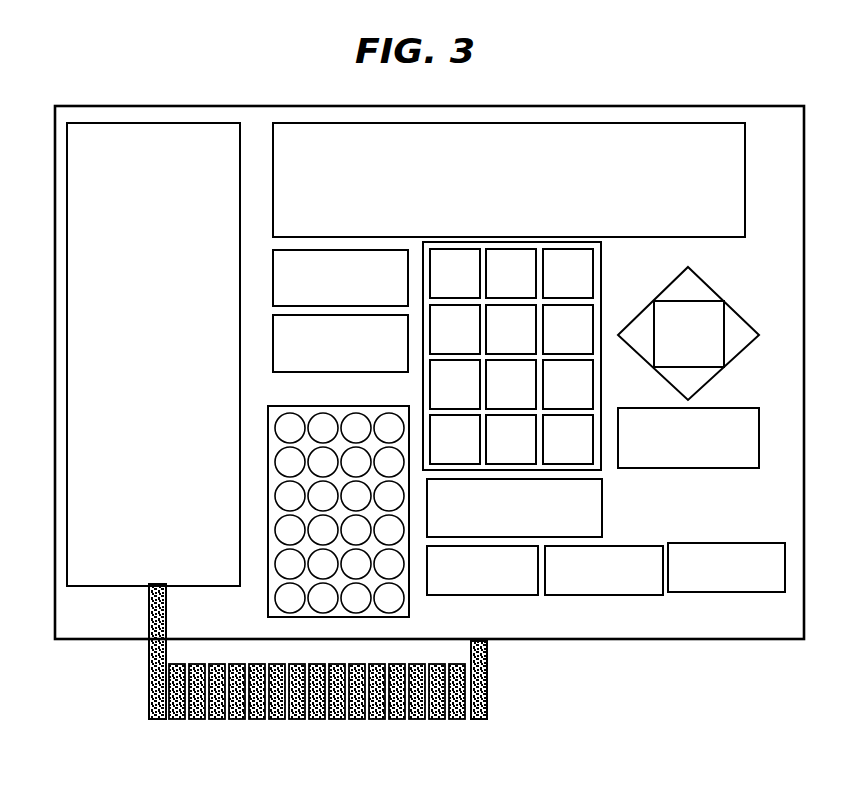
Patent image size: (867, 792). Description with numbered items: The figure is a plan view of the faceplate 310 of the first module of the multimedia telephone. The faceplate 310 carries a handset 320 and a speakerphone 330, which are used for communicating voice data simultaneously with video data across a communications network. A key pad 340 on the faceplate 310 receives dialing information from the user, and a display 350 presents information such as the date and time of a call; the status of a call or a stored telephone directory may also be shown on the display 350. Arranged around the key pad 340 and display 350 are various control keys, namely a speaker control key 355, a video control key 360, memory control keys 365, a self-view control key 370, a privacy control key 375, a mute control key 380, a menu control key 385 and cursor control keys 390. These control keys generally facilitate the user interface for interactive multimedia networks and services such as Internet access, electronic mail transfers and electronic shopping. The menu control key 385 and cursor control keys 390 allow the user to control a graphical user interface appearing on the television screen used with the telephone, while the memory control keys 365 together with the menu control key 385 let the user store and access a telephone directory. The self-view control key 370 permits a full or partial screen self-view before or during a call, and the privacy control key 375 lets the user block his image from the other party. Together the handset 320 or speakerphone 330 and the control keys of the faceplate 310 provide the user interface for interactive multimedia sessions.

The faceplate 310 is at (779, 628).
The handset 320 is at (115, 166).
The speakerphone 330 is at (340, 413).
The key pad 340 is at (598, 266).
The display 350 is at (316, 166).
The speaker control key 355 is at (316, 291).
The video control key 360 is at (316, 354).
The memory control keys 365 is at (468, 513).
The self-view control key 370 is at (468, 578).
The privacy control key 375 is at (586, 578).
The mute control key 380 is at (711, 576).
The menu control key 385 is at (706, 458).
The cursor control keys 390 is at (706, 351).